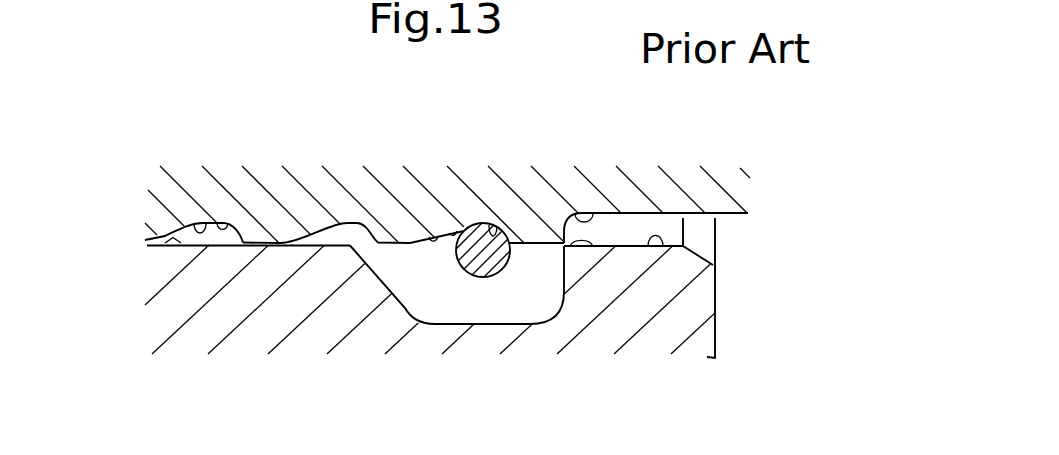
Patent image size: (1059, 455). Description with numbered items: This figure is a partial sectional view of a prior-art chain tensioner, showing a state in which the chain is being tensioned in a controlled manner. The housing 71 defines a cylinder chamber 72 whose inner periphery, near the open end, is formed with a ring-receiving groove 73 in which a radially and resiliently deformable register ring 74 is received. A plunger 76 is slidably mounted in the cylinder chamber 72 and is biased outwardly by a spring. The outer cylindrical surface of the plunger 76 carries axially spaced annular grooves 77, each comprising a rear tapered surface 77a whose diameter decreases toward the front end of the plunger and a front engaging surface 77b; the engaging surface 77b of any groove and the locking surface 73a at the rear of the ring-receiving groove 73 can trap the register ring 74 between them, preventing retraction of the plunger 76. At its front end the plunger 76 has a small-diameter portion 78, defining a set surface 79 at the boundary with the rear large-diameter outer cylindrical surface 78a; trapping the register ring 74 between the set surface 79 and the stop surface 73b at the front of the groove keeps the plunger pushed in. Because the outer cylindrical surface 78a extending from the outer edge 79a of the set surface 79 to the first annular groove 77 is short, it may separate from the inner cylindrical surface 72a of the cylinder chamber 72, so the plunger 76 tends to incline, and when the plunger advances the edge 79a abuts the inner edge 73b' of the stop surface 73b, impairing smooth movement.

The housing 71 is at (205, 320).
The cylinder chamber 72 is at (147, 248).
The inner cylindrical surface 72a is at (663, 247).
The ring-receiving groove 73 is at (528, 324).
The locking surface 73a is at (410, 317).
The stop surface 73b is at (584, 350).
The inner edge of stop surface 73b' is at (623, 331).
The register ring 74 is at (487, 277).
The plunger 76 is at (167, 192).
The annular groove 77 is at (230, 232).
The rear tapered surface 77a is at (203, 226).
The front engaging surface 77b is at (498, 228).
The small-diameter portion 78 is at (728, 178).
The outer cylindrical surface 78a is at (694, 218).
The set surface 79 is at (597, 213).
The outer edge of set surface 79a is at (553, 227).